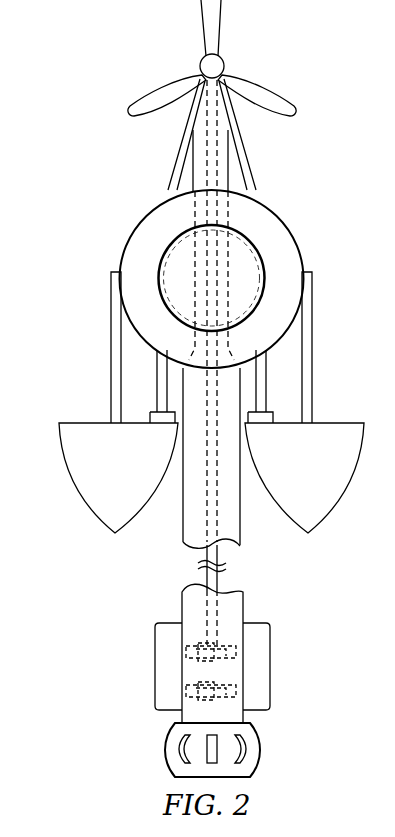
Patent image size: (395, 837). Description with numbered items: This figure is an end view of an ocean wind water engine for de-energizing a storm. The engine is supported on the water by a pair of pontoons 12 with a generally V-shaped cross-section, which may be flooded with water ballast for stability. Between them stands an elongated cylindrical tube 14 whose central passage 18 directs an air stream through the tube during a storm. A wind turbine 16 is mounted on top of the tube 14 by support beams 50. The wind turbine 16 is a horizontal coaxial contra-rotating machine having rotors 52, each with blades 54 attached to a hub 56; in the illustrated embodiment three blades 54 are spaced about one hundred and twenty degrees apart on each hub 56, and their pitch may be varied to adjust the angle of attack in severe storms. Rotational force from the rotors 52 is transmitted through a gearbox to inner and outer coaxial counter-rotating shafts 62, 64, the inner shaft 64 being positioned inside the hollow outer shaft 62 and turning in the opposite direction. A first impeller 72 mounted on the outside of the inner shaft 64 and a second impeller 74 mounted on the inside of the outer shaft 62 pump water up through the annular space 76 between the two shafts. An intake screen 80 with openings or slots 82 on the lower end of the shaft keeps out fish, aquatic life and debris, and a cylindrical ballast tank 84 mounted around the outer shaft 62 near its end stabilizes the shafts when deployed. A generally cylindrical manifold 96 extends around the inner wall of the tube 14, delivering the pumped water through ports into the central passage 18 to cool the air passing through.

The pontoons 12 is at (73, 483).
The elongated cylindrical tube 14 is at (162, 204).
The wind turbine 16 is at (191, 58).
The central passage 18 is at (178, 256).
The support beams 50 is at (247, 156).
The rotors 52 is at (198, 56).
The blades 54 is at (142, 97).
The hub 56 is at (222, 60).
The outer coaxial counter-rotating shaft 62 is at (182, 605).
The inner coaxial counter-rotating shaft 64 is at (218, 610).
The first impeller 72 is at (210, 662).
The second impeller 74 is at (213, 677).
The annular space 76 is at (233, 541).
The intake screen 80 is at (166, 750).
The openings or slots 82 is at (259, 750).
The ballast tank 84 is at (155, 640).
The manifold 96 is at (255, 258).